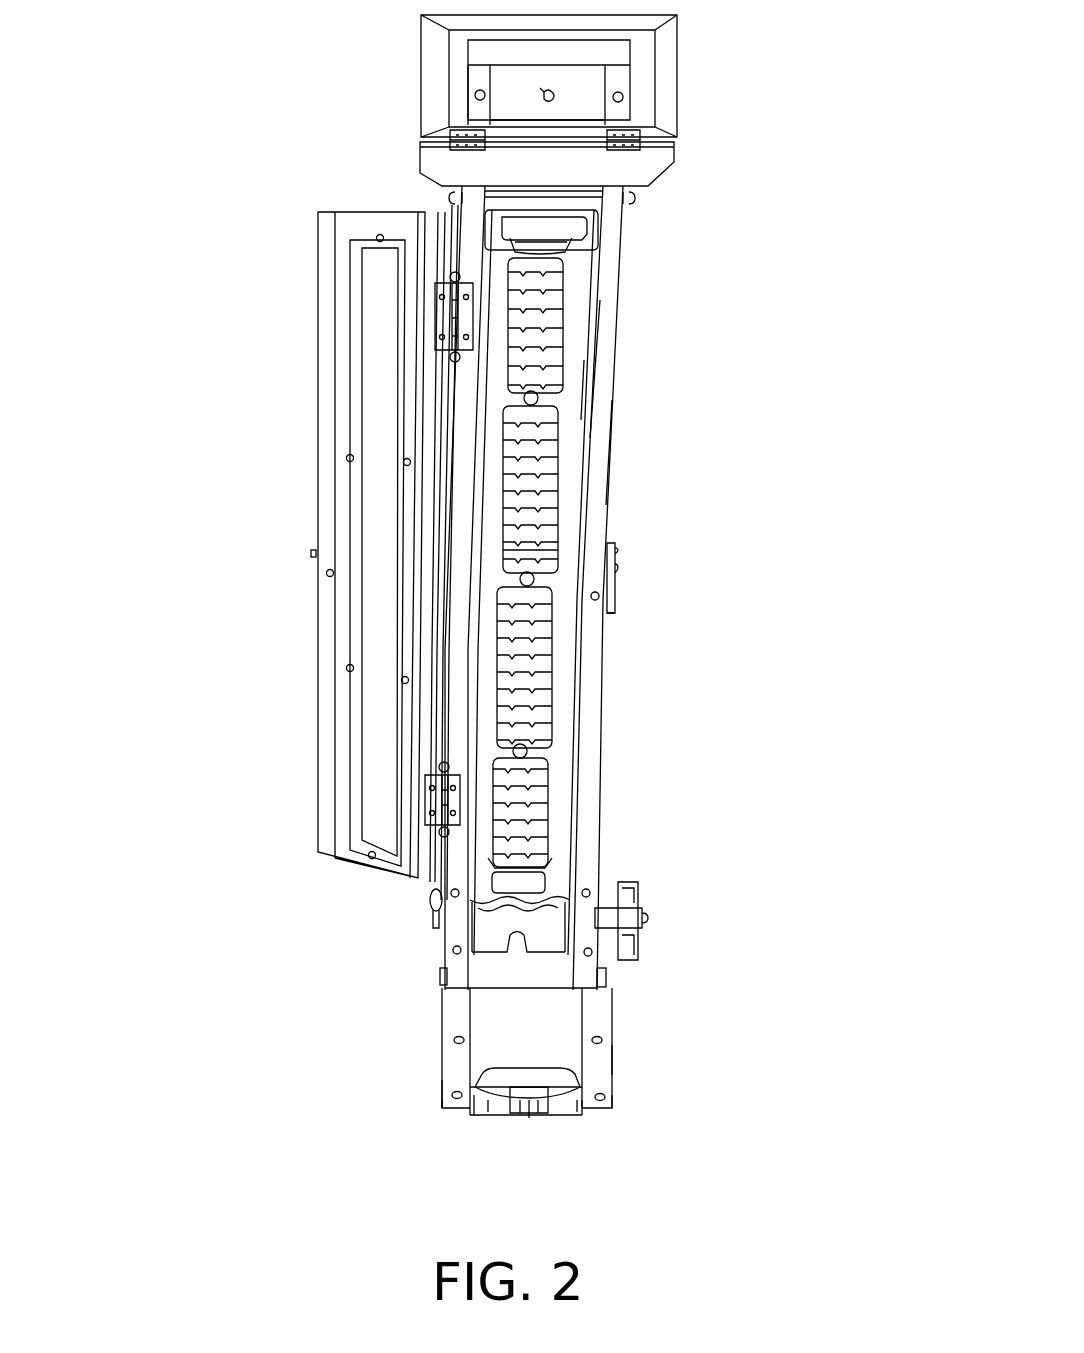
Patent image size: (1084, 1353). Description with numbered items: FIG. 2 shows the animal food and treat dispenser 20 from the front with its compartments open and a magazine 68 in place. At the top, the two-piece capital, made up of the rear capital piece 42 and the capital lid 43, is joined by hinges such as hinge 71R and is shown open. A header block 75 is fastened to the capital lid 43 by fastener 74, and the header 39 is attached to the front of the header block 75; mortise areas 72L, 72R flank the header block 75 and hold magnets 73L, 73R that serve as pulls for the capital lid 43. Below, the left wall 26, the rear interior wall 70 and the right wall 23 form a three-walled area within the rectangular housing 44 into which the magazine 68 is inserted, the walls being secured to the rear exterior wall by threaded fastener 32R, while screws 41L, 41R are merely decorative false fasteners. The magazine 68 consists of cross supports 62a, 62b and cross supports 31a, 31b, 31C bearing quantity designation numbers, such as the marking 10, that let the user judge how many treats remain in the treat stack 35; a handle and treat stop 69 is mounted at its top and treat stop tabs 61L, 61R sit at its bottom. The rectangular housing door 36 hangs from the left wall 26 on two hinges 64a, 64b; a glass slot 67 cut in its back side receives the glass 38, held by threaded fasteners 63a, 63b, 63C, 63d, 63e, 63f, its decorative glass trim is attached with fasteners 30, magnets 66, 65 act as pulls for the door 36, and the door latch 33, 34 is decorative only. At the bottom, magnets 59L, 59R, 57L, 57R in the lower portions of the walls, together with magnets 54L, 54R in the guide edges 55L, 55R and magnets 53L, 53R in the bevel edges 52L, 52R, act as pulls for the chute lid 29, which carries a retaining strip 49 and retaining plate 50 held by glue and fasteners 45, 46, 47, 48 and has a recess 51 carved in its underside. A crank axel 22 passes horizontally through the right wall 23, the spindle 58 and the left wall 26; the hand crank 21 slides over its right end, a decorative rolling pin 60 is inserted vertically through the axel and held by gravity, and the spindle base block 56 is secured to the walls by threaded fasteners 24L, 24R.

The bottle cap 10 is at (524, 665).
The animal food and treat dispenser 20 is at (600, 730).
The hand crank 21 is at (638, 896).
The crank axel 22 is at (648, 918).
The right wall 23 is at (610, 447).
The threaded fastener 24L is at (440, 975).
The threaded fastener 24R is at (606, 1000).
The left wall 26 is at (460, 590).
The chute lid 29 is at (443, 1079).
The fastener 30 is at (531, 398).
The cross support with quantity designation number 31a is at (545, 760).
The cross support with quantity designation number 31b is at (540, 575).
The cross support with quantity designation number 31C is at (535, 435).
The threaded fastener 32R is at (617, 553).
The door latch 33 is at (618, 580).
The door latch 34 is at (312, 557).
The treat stack 35 is at (530, 685).
The rectangular housing door 36 is at (320, 232).
The glass 38 is at (382, 286).
The header 39 is at (622, 62).
The screw 41L is at (450, 200).
The screw 41R is at (630, 205).
The rear capital piece 42 is at (420, 148).
The capital lid 43 is at (418, 30).
The rectangular housing 44 is at (608, 506).
The fastener 45 is at (473, 1105).
The fastener 46 is at (488, 1104).
The fastener 47 is at (529, 1113).
The fastener 48 is at (577, 1112).
The retaining strip 49 is at (590, 1106).
The retaining plate 50 is at (535, 1085).
The recess 51 is at (495, 1072).
The bevel edge 52L is at (460, 1105).
The bevel edge 52R is at (605, 1098).
The magnet 53L is at (452, 1096).
The magnet 53R is at (612, 1100).
The magnet 54L is at (447, 1052).
The magnet 54R is at (612, 1060).
The guide edge 55L is at (454, 1040).
The guide edge 55R is at (602, 1040).
The spindle base block 56 is at (562, 975).
The magnet 57L is at (455, 952).
The magnet 57R is at (592, 953).
The spindle 58 is at (560, 950).
The magnet 59L is at (453, 897).
The magnet 59R is at (590, 893).
The rolling pin 60 is at (430, 903).
The treat stop tab 61L is at (512, 862).
The treat stop tab 61R is at (556, 893).
The cross support 62a is at (548, 872).
The cross support 62b is at (542, 258).
The threaded fastener 63a is at (371, 858).
The threaded fastener 63b is at (405, 683).
The threaded fastener 63C is at (350, 670).
The threaded fastener 63d is at (405, 466).
The threaded fastener 63e is at (348, 462).
The threaded fastener 63f is at (380, 242).
The hinge 64a is at (430, 800).
The hinge 64b is at (435, 340).
The magnet 65 is at (596, 600).
The magnet 66 is at (330, 577).
The glass slot 67 is at (352, 430).
The magazine 68 is at (578, 412).
The handle and treat stop 69 is at (560, 233).
The rear interior wall 70 is at (597, 210).
The hinge 71R is at (650, 183).
The mortise area 72L is at (468, 100).
The mortise area 72R is at (632, 110).
The magnet 73L is at (476, 96).
The magnet 73R is at (622, 98).
The fastener 74 is at (543, 93).
The header block 75 is at (597, 92).